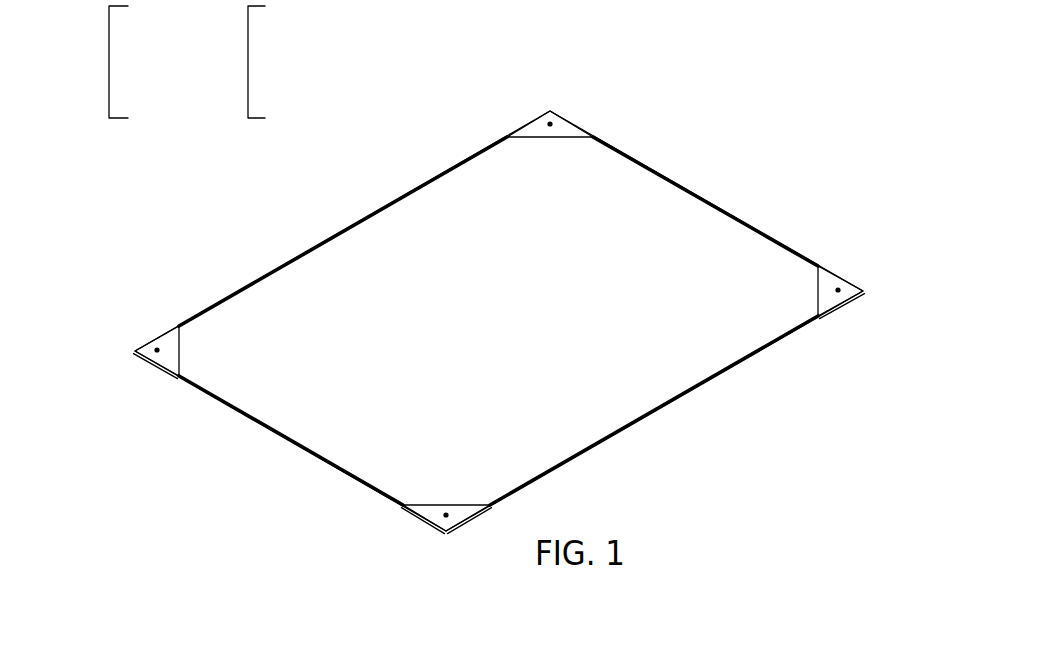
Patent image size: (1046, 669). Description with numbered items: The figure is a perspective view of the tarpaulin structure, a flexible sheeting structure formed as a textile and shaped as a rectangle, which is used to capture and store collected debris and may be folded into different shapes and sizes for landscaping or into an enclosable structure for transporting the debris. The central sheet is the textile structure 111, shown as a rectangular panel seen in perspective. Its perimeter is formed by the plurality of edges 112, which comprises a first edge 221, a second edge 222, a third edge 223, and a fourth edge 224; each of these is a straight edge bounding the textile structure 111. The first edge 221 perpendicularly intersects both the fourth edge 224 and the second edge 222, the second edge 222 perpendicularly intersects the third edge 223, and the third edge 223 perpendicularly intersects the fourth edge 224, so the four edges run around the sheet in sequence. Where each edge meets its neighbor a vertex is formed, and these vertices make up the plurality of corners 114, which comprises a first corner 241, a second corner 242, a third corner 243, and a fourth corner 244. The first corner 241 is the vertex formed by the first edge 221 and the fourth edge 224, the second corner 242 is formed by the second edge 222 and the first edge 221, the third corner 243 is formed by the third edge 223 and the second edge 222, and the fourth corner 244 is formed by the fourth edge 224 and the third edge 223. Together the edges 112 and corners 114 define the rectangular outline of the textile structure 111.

The textile structure 111 is at (306, 308).
The plurality of edges 112 is at (109, 63).
The plurality of corners 114 is at (248, 63).
The first edge 221 is at (394, 209).
The second edge 222 is at (699, 196).
The third edge 223 is at (690, 392).
The fourth edge 224 is at (287, 443).
The first corner 241 is at (123, 351).
The second corner 242 is at (560, 99).
The third corner 243 is at (877, 291).
The fourth corner 244 is at (446, 546).